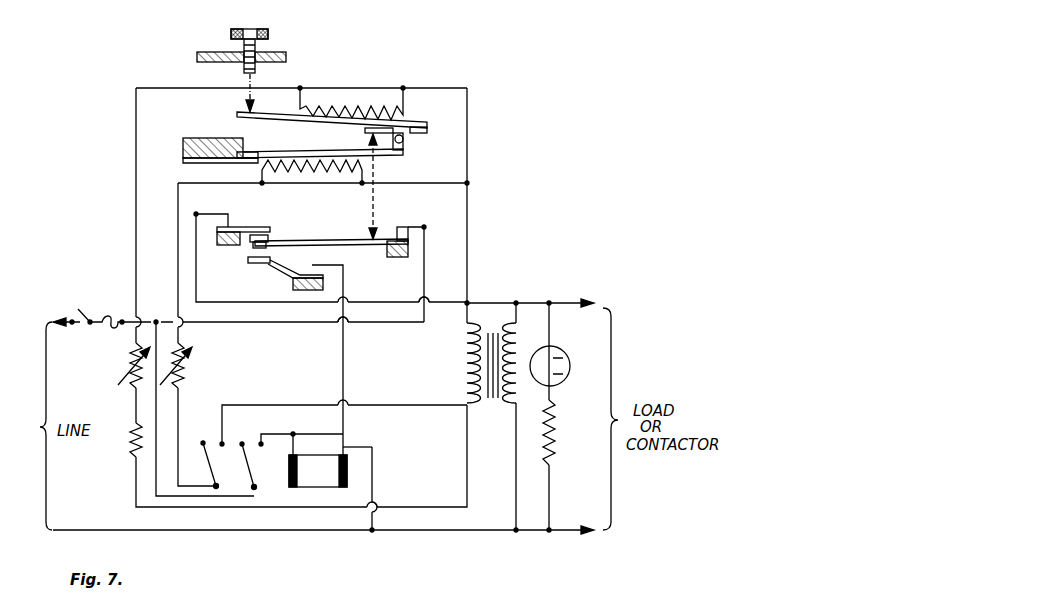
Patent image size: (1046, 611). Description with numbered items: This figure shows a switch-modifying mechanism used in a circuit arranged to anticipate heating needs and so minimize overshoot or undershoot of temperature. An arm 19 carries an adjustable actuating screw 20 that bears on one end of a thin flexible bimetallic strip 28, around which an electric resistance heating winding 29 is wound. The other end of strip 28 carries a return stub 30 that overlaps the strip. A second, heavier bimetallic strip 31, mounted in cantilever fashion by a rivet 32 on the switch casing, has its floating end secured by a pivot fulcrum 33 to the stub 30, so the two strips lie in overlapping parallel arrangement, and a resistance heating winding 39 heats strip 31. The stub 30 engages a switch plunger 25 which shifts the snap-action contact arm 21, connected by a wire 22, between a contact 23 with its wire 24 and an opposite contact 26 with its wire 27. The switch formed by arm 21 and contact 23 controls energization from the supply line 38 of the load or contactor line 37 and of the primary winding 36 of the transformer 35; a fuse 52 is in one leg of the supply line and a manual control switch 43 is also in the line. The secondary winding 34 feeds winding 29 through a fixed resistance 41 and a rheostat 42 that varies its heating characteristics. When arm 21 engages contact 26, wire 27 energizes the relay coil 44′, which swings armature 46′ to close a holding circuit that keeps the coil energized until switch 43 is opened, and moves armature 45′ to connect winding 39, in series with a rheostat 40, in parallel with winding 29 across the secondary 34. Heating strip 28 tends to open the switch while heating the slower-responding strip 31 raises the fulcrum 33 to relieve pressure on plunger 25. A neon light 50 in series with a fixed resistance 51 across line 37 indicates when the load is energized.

The arm 19 is at (212, 53).
The screw 20 is at (256, 73).
The contact arm 21 is at (330, 240).
The wire 22 is at (413, 226).
The contact 23 is at (268, 236).
The wire 24 is at (228, 224).
The plunger 25 is at (378, 205).
The opposite contact 26 is at (250, 256).
The wire 27 is at (343, 263).
The flexible bimetallic strip 28 is at (237, 116).
The electric resistance heating winding 29 is at (338, 108).
The return stub 30 is at (414, 136).
The second flexible bimetallic strip 31 is at (330, 150).
The rivet 32 is at (247, 165).
The pivot fulcrum 33 is at (400, 149).
The secondary winding 34 is at (470, 375).
The transformer 35 is at (492, 405).
The primary winding 36 is at (511, 346).
The load or contactor line 37 is at (566, 291).
The supply line 38 is at (70, 326).
The resistance heating winding 39 is at (345, 175).
The rheostat 40 is at (190, 368).
The fixed resistance 41 is at (133, 455).
The rheostat 42 is at (131, 368).
The manual control switch 43 is at (82, 311).
The relay coil 44′ is at (330, 453).
The armature 45′ is at (210, 468).
The armature 46′ is at (257, 478).
The neon light 50 is at (563, 381).
The fixed resistance 51 is at (553, 452).
The fuse 52 is at (110, 318).